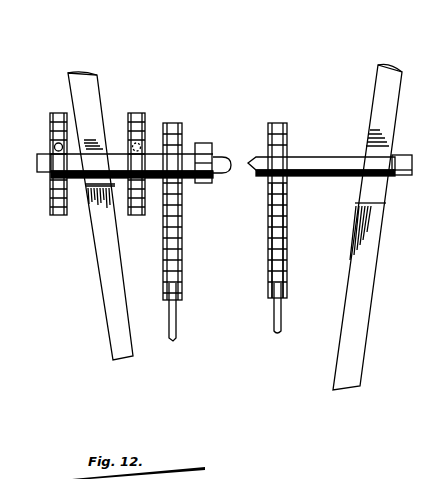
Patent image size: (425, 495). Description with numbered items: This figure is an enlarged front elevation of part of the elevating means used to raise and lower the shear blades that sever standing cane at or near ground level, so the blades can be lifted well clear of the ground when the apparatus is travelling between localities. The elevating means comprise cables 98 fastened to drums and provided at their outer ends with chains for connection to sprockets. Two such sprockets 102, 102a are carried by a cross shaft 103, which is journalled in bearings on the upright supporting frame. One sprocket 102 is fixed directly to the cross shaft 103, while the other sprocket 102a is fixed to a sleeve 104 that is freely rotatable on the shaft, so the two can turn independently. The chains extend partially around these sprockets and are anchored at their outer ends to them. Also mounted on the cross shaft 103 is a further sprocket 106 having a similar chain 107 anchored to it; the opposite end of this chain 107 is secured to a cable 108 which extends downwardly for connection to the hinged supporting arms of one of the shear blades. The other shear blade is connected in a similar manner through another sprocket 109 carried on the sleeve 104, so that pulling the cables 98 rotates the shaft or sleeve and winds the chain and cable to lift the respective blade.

The cables 98 is at (74, 138).
The sprocket 102 is at (65, 216).
The sprocket 102a is at (138, 217).
The cross shaft 103 is at (326, 153).
The sleeve 104 is at (155, 150).
The sprocket 106 is at (278, 124).
The chain 107 is at (284, 241).
The cable 108 is at (282, 316).
The sprocket 109 is at (184, 137).